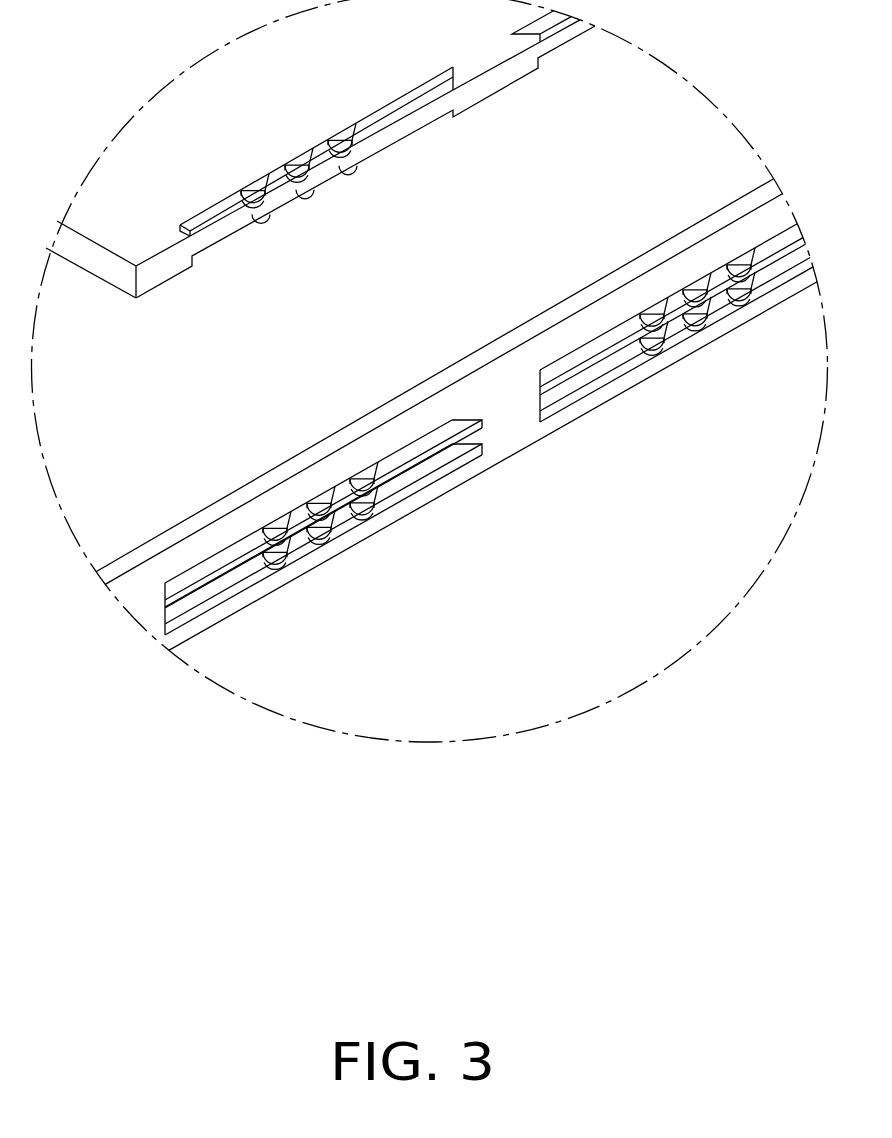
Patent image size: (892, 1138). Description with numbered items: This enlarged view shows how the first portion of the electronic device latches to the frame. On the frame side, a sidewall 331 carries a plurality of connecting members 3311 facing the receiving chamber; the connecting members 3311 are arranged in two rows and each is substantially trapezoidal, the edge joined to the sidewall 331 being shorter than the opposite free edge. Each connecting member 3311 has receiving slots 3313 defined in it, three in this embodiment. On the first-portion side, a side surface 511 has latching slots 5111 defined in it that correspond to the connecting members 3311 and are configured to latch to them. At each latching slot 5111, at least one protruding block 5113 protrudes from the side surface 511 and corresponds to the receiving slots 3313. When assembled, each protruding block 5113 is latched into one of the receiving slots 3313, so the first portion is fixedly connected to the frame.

The side surface 511 is at (162, 273).
The latching slot 5111 is at (386, 122).
The protruding block 5113 is at (258, 182).
The sidewall 331 is at (502, 422).
The connecting member 3311 is at (577, 355).
The receiving slot 3313 is at (647, 307).